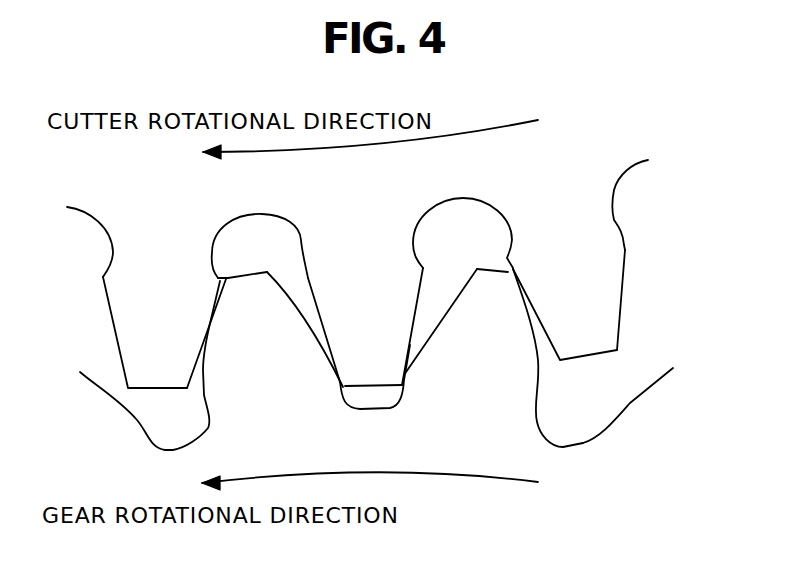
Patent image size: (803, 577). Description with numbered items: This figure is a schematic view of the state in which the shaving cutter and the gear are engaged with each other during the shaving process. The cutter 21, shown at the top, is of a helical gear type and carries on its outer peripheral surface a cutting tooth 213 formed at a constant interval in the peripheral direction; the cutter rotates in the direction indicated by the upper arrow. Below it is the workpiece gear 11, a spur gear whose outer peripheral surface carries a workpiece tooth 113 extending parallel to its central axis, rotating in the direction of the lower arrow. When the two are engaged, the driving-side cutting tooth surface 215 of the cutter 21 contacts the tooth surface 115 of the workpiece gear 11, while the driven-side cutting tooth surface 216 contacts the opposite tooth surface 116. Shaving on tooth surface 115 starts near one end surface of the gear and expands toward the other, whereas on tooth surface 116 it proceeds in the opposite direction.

The workpiece gear 11 is at (665, 370).
The workpiece tooth 113 is at (615, 409).
The tooth surface 115 is at (308, 317).
The tooth surface 116 is at (433, 323).
The cutter 21 is at (615, 195).
The cutting tooth 213 is at (627, 255).
The driving-side cutting tooth surface 215 is at (313, 295).
The driven-side cutting tooth surface 216 is at (418, 288).